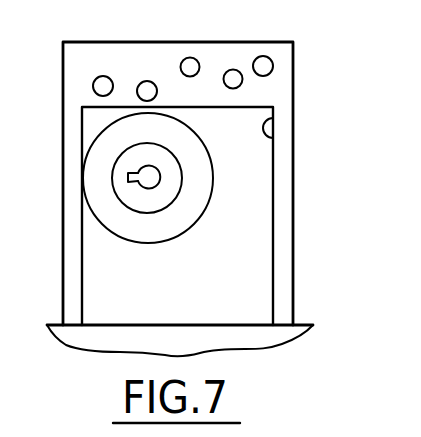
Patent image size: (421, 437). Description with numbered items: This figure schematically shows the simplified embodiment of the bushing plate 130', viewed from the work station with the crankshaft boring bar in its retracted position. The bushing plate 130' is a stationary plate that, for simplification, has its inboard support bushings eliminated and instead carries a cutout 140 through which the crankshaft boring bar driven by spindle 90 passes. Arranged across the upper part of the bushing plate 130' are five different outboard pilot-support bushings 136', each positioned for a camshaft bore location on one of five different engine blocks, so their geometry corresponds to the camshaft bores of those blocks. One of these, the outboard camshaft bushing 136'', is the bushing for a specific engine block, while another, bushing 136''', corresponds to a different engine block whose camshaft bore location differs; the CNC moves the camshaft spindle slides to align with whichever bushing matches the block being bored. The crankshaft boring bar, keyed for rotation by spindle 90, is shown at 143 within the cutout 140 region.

The bushing plate 130' is at (215, 183).
The outboard pilot-support bushings 136' is at (311, 58).
The outboard camshaft bushing 136'' is at (183, 56).
The outboard camshaft bushing 136''' is at (79, 52).
The cutout 140 is at (265, 137).
The spindle 90 is at (212, 172).
The keyhole opening 143 is at (153, 185).